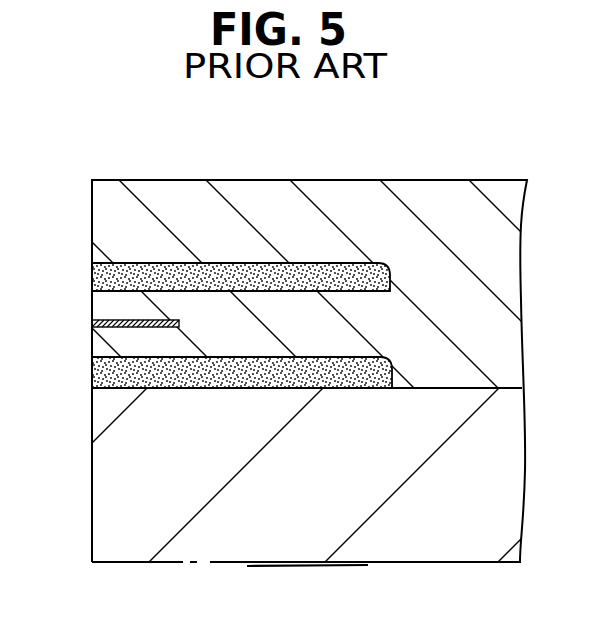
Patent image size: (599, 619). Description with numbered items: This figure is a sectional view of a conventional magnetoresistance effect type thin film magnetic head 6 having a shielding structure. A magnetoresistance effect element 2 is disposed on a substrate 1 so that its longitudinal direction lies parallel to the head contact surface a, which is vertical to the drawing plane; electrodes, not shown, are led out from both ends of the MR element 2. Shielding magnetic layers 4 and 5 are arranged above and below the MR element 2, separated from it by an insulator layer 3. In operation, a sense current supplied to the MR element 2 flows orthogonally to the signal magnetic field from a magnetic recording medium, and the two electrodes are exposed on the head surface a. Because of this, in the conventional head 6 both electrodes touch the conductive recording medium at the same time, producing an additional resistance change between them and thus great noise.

The thin film magnetic head 6 is at (77, 141).
The insulator layer 3 is at (440, 193).
The shielding magnetic layer 4 is at (270, 281).
The head contact surface a is at (84, 277).
The magnetoresistance effect element 2 is at (92, 325).
The shielding magnetic layer 5 is at (223, 374).
The substrate 1 is at (103, 495).